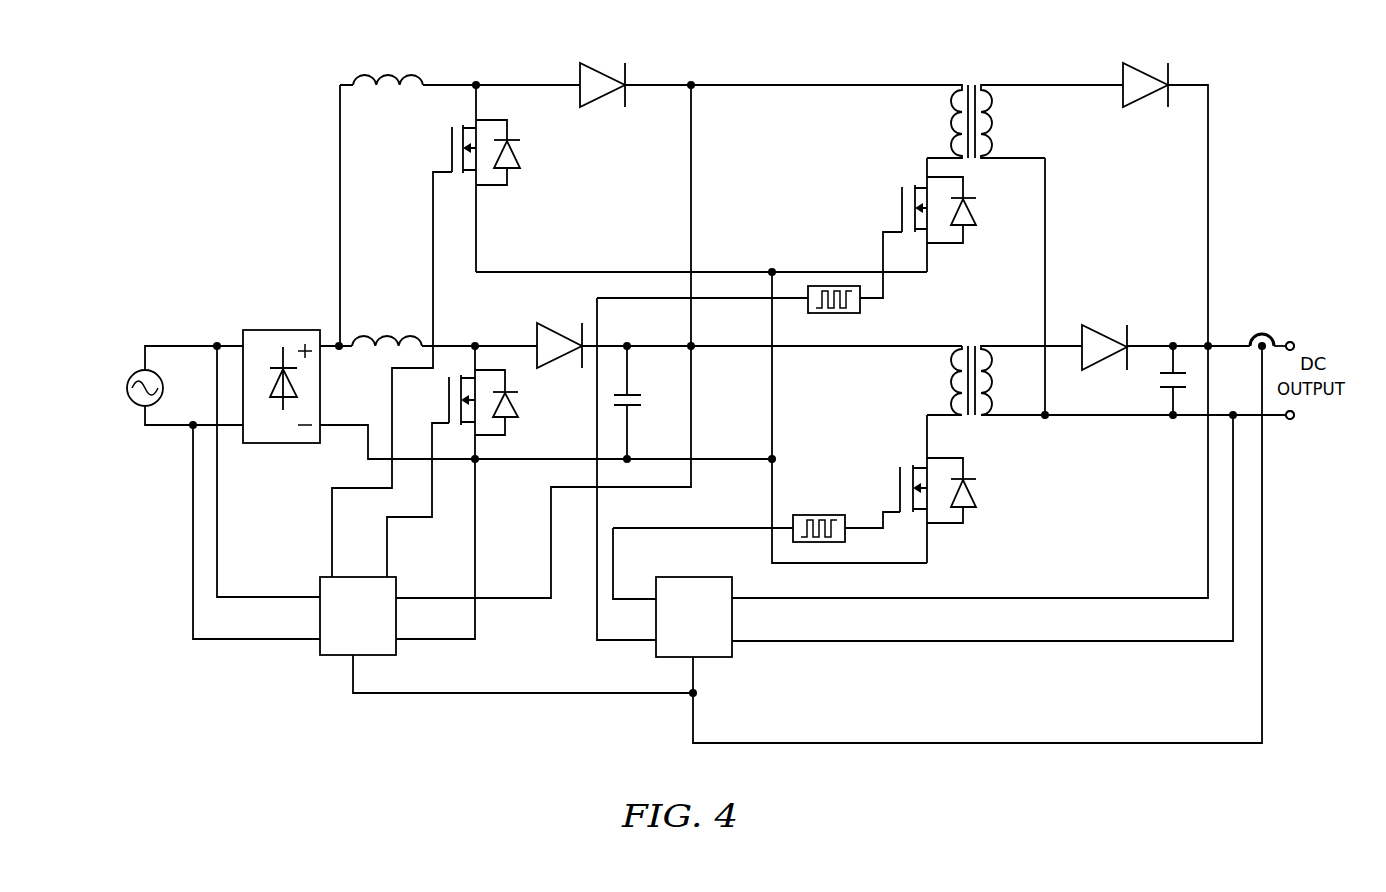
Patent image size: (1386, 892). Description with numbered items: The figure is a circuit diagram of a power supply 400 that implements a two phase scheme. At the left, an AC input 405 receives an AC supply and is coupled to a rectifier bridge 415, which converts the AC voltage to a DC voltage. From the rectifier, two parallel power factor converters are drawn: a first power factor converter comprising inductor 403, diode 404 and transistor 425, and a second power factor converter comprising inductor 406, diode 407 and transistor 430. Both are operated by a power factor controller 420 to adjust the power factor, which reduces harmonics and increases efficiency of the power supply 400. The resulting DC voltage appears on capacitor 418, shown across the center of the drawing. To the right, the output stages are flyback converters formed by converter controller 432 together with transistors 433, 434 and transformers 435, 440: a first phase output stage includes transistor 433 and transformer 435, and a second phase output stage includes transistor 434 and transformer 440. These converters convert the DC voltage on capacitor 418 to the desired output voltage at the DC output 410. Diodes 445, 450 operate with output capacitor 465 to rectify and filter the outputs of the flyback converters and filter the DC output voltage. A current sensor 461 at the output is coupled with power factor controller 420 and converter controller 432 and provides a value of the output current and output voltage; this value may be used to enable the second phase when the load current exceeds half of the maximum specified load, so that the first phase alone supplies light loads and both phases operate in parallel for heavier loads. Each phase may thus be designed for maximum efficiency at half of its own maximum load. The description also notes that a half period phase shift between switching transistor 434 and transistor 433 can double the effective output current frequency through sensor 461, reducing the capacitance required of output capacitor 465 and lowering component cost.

The power supply 400 is at (278, 144).
The inductor 403 is at (383, 78).
The diode 404 is at (608, 63).
The AC input 405 is at (126, 364).
The inductor 406 is at (397, 330).
The diode 407 is at (553, 323).
The DC output 410 is at (1302, 407).
The rectifier bridge 415 is at (299, 328).
The capacitor 418 is at (647, 398).
The power factor controller 420 is at (318, 581).
The transistor 425 is at (520, 149).
The transistor 430 is at (518, 405).
The converter controller 432 is at (732, 580).
The transistor 433 is at (980, 213).
The transistor 434 is at (980, 488).
The transformer 435 is at (997, 117).
The transformer 440 is at (947, 368).
The diode 445 is at (1137, 112).
The diode 450 is at (1095, 370).
The current sensor 461 is at (1275, 340).
The output capacitor 465 is at (1180, 392).